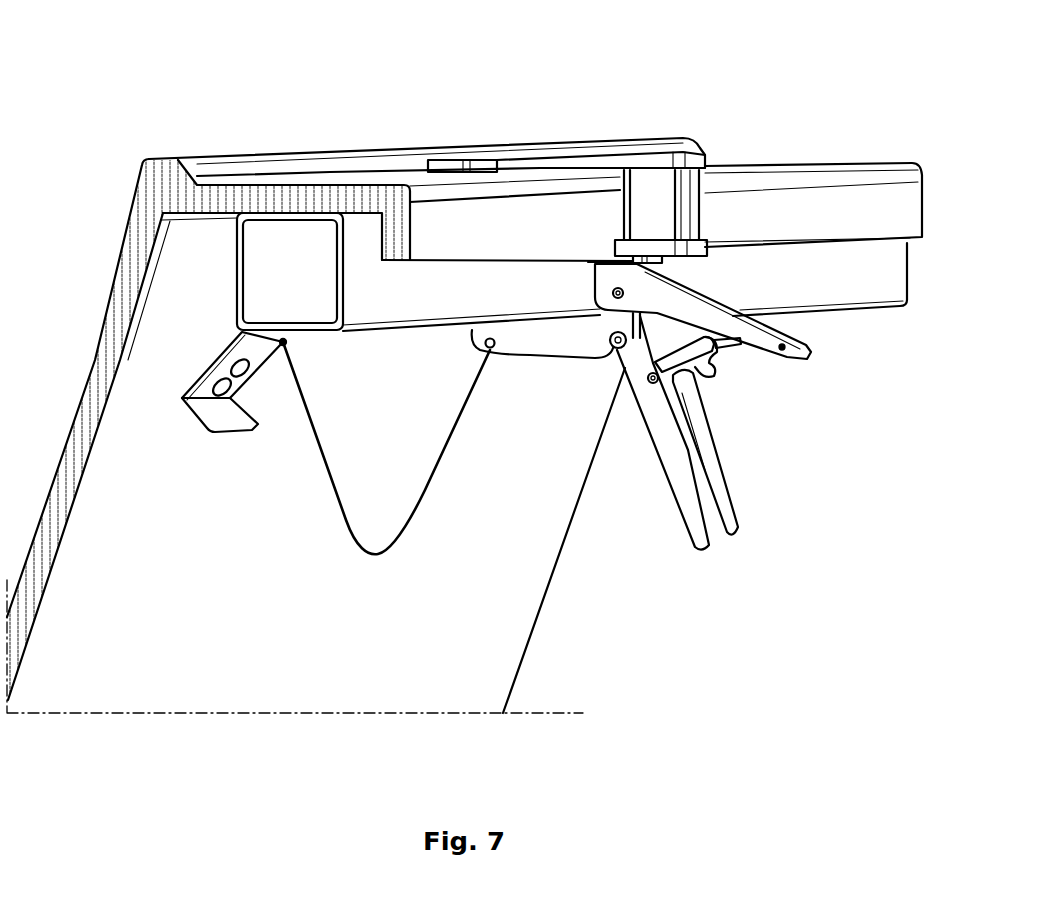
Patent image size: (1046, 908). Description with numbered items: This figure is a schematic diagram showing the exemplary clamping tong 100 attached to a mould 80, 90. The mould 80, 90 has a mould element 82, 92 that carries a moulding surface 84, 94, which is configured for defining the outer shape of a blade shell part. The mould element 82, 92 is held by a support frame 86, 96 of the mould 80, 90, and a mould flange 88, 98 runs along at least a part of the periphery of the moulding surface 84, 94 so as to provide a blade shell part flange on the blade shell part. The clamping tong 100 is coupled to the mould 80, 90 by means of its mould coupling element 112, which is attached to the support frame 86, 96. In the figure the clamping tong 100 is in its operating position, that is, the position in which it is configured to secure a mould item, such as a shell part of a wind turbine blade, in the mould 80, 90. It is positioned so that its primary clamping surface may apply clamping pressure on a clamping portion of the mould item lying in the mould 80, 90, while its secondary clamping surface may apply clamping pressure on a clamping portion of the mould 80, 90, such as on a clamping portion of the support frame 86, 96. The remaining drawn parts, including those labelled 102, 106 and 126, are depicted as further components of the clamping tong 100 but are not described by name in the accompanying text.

The mould 80 is at (216, 174).
The mould 90 is at (61, 162).
The mould element 82 is at (427, 128).
The mould element 92 is at (195, 157).
The moulding surface 84 is at (88, 429).
The moulding surface 94 is at (108, 306).
The support frame 86 is at (534, 309).
The support frame 96 is at (386, 326).
The mould flange 88 is at (635, 172).
The mould flange 98 is at (360, 163).
The clamping tong 100 is at (662, 545).
The actuator 102 is at (570, 118).
The lever bracket 106 is at (557, 386).
The mould coupling element 112 is at (246, 452).
The lanyard cable 126 is at (343, 517).